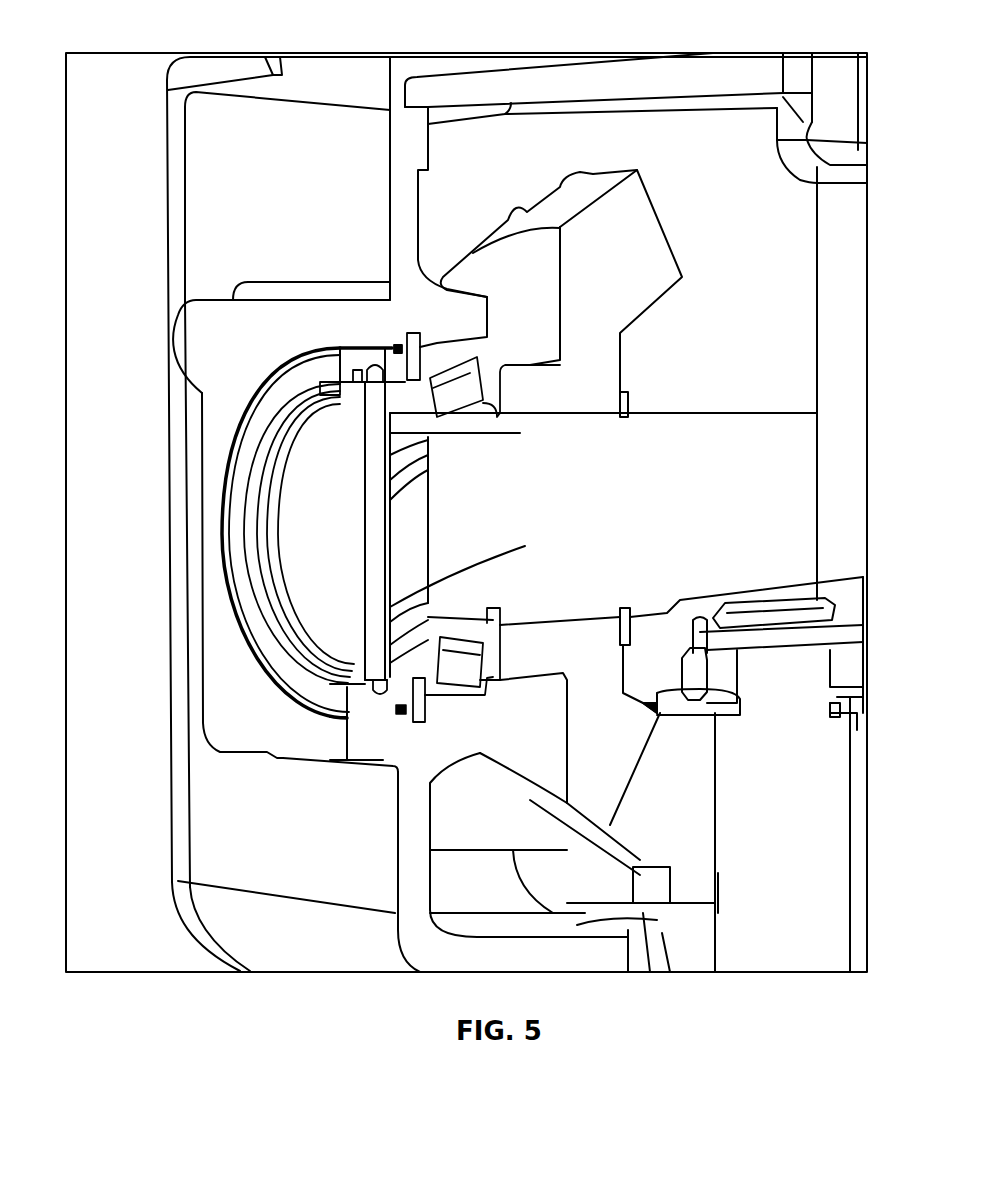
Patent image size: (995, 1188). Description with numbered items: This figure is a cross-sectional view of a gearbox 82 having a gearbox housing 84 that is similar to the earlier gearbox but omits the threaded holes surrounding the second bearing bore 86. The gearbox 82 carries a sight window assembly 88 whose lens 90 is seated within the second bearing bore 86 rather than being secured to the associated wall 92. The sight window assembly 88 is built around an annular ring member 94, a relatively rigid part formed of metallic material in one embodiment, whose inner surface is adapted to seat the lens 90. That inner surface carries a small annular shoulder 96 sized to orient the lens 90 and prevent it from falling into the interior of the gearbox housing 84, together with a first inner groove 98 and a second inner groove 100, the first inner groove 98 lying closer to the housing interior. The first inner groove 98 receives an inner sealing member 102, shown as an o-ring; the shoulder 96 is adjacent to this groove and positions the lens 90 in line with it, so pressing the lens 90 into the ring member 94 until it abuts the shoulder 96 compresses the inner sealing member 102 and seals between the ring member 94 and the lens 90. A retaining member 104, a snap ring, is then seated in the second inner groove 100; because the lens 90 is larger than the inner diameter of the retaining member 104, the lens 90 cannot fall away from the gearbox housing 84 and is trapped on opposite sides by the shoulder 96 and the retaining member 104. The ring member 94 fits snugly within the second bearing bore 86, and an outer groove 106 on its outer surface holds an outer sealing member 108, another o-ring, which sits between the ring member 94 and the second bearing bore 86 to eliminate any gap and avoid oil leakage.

The gearbox 82 is at (86, 418).
The gearbox housing 84 is at (160, 727).
The second bearing bore 86 is at (400, 710).
The sight window assembly 88 is at (148, 510).
The lens 90 is at (342, 539).
The wall 92 is at (197, 203).
The annular ring member 94 is at (303, 685).
The annular shoulder 96 is at (392, 706).
The first inner groove 98 is at (376, 690).
The second inner groove 100 is at (356, 370).
The inner sealing member 102 is at (377, 370).
The retaining member 104 is at (270, 607).
The outer groove 106 is at (403, 345).
The outer sealing member 108 is at (392, 343).